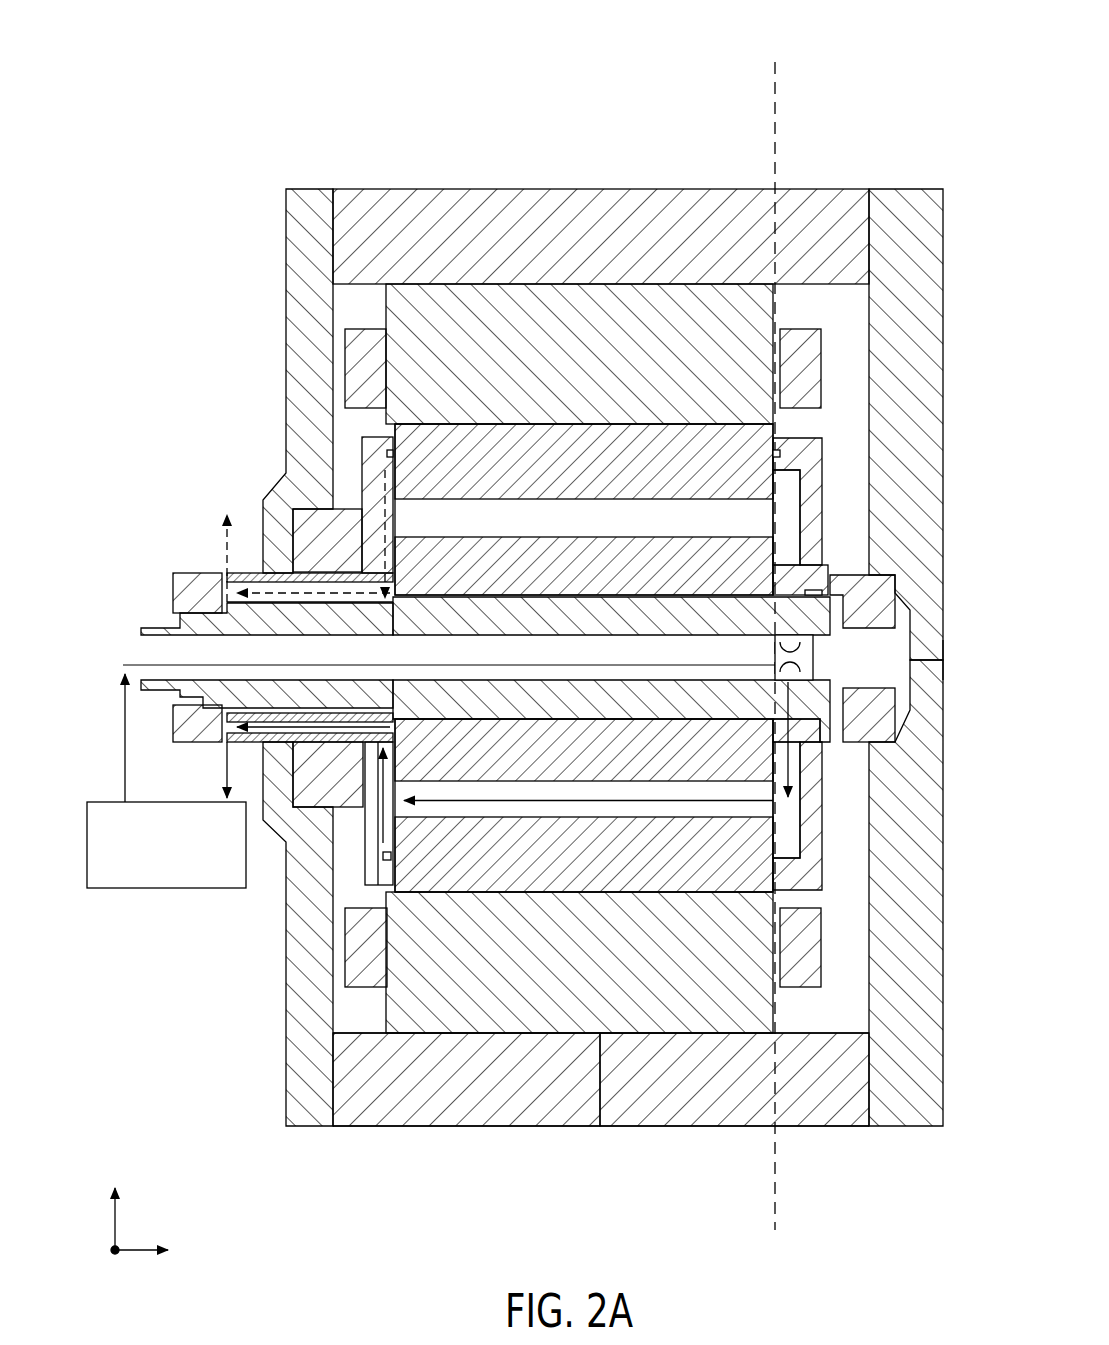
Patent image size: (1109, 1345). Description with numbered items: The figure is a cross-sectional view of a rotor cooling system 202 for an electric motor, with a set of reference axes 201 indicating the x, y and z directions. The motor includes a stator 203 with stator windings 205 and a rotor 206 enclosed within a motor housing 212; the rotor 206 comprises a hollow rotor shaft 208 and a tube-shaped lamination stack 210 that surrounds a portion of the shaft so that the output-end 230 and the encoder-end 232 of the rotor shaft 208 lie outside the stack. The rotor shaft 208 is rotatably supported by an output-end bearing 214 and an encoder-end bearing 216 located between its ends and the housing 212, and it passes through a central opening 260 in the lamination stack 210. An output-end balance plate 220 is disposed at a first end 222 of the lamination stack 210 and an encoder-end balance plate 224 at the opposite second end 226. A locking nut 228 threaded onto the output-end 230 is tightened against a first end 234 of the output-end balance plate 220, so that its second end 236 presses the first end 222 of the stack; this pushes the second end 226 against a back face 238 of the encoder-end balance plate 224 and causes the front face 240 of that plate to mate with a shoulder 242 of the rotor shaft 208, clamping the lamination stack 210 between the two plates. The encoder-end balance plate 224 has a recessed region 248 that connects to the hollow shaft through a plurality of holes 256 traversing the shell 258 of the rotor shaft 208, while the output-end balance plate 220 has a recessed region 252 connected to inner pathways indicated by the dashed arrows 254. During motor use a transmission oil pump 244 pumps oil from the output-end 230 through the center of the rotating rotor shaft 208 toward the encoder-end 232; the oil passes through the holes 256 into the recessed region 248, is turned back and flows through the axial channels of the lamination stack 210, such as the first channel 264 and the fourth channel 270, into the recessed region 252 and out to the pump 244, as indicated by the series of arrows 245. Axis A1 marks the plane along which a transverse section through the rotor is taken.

The reference axes 201 is at (158, 1203).
The rotor cooling system 202 is at (183, 425).
The stator 203 is at (579, 354).
The stator windings 205 is at (583, 658).
The rotor 206 is at (598, 452).
The hollow rotor shaft 208 is at (485, 616).
The lamination stack 210 is at (579, 876).
The motor housing 212 is at (603, 657).
The output-end bearing 214 is at (328, 658).
The encoder-end bearing 216 is at (869, 715).
The output-end balance plate 220 is at (382, 470).
The first end of the lamination stack 222 is at (393, 455).
The encoder-end balance plate 224 is at (805, 455).
The second end of the lamination stack 226 is at (775, 452).
The locking nut 228 is at (183, 585).
The output-end of the rotor shaft 230 is at (160, 645).
The encoder-end of the rotor shaft 232 is at (890, 648).
The first end of the output-end balance plate 234 is at (206, 572).
The second end of the output-end balance plate 236 is at (393, 882).
The back face of the encoder-end balance plate 238 is at (773, 583).
The front face of the encoder-end balance plate 240 is at (830, 578).
The shoulder of the rotor shaft 242 is at (822, 745).
The transmission oil pump 244 is at (166, 781).
The series of arrows 245 is at (232, 662).
The recessed region of the encoder-end balance plate 248 is at (790, 520).
The recessed region of the output-end balance plate 252 is at (398, 500).
The series of dashed arrows 254 is at (297, 598).
The plurality of holes 256 is at (808, 657).
The shell of the rotor shaft 258 is at (485, 711).
The central opening 260 is at (462, 622).
The first channel 264 is at (620, 502).
The fourth channel 270 is at (598, 783).
The axis A1 is at (778, 123).